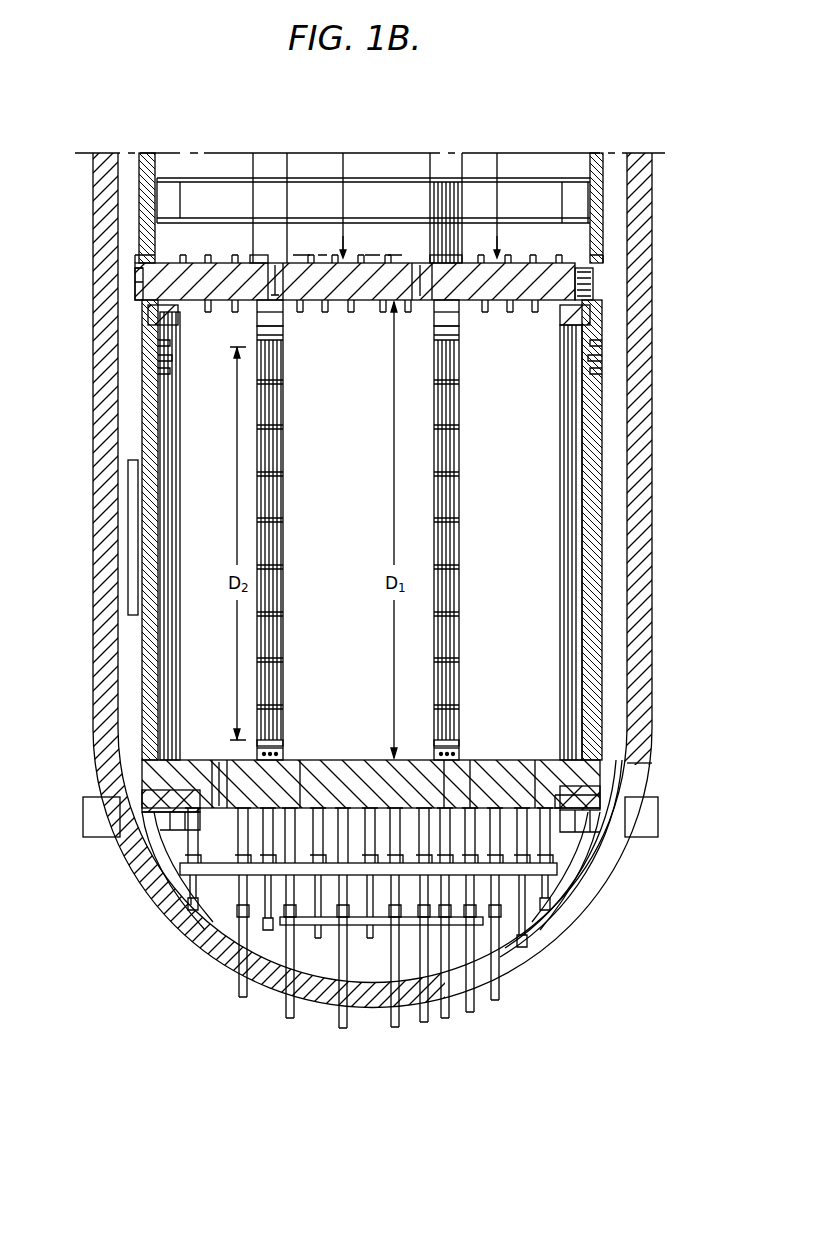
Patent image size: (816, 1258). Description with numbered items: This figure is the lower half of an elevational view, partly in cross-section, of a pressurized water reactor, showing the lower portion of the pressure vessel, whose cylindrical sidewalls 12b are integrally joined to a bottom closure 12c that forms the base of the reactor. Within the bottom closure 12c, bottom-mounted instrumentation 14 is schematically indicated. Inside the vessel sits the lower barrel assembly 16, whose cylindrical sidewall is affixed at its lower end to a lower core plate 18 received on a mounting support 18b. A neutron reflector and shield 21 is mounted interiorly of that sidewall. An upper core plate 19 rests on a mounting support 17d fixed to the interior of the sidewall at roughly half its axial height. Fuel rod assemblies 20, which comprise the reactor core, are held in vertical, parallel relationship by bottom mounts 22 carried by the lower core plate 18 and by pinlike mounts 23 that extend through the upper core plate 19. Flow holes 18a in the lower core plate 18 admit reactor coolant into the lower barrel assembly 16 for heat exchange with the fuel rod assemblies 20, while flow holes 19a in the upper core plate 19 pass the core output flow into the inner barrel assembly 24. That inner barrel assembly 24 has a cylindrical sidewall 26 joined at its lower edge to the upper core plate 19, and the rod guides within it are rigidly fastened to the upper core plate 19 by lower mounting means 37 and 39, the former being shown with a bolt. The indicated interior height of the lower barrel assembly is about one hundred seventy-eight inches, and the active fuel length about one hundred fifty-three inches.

The cylindrical sidewalls 12b is at (652, 690).
The bottom closure 12c is at (622, 848).
The bottom-mounted instrumentation 14 is at (405, 970).
The lower barrel assembly 16 is at (125, 405).
The mounting support 17d is at (590, 292).
The lower core plate 18 is at (325, 762).
The flow holes 18a is at (225, 760).
The mounting support 18b is at (592, 878).
The upper core plate 19 is at (519, 263).
The flow holes 19a is at (326, 312).
The fuel rod assemblies 20 is at (434, 500).
The neutron reflector and shield 21 is at (180, 397).
The bottom mounts 22 is at (283, 752).
The pinlike mounts 23 is at (510, 312).
The inner barrel assembly 24 is at (260, 148).
The cylindrical sidewall 26 is at (152, 160).
The mounting means 37 is at (252, 262).
The mounting means 39 is at (428, 262).